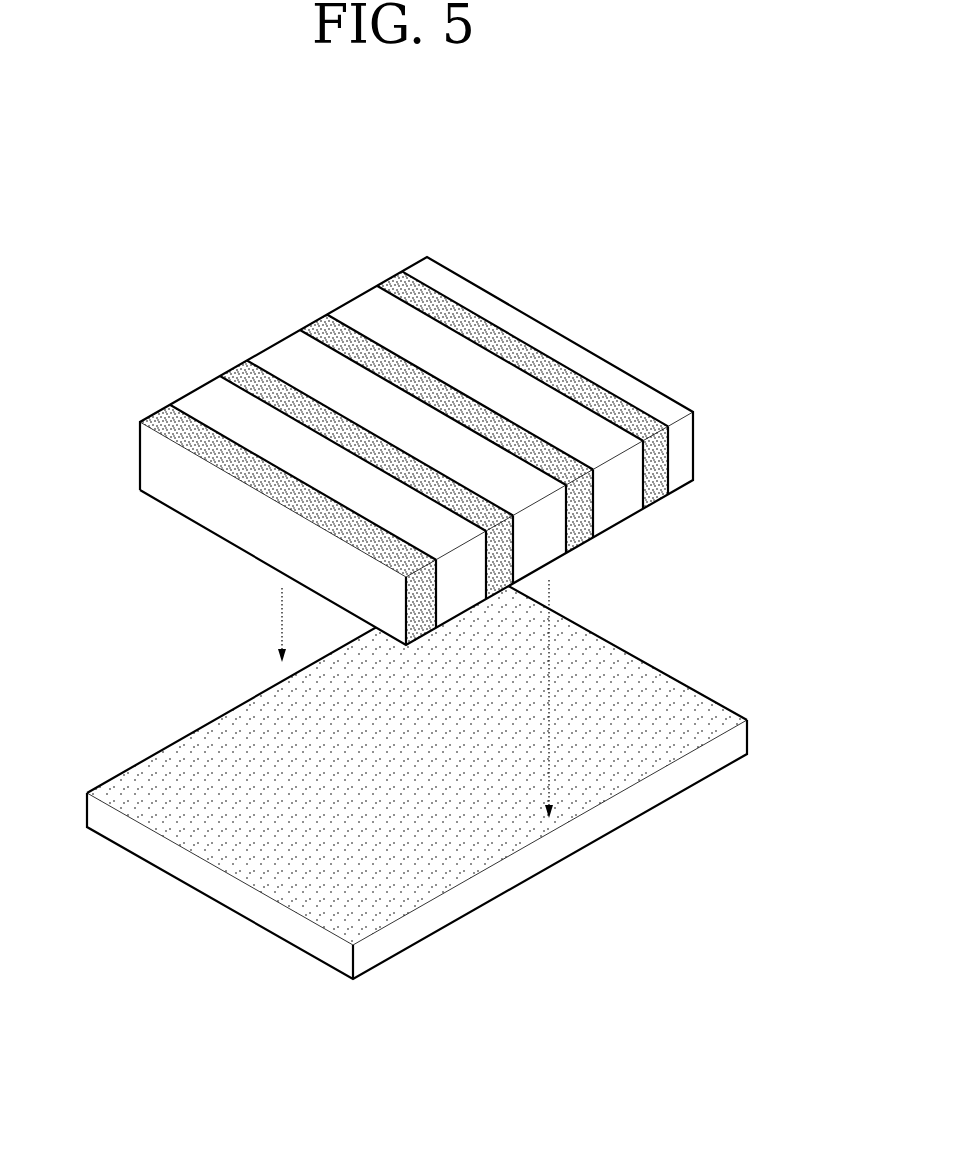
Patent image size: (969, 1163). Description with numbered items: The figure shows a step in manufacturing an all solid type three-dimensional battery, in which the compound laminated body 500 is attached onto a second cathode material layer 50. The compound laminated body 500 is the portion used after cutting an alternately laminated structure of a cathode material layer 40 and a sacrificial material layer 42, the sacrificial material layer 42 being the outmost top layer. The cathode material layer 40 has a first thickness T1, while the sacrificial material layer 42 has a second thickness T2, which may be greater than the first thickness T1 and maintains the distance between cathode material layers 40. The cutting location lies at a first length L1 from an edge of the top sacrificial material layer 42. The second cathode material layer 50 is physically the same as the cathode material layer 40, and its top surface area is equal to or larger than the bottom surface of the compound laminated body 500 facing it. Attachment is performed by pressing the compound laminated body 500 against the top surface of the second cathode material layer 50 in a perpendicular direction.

The cathode material layer 40 is at (235, 525).
The sacrificial material layer 42 is at (567, 413).
The second cathode material layer 50 is at (473, 898).
The compound laminated body 500 is at (630, 536).
The first length L1 is at (140, 490).
The first thickness T1 is at (263, 435).
The second thickness T2 is at (310, 487).